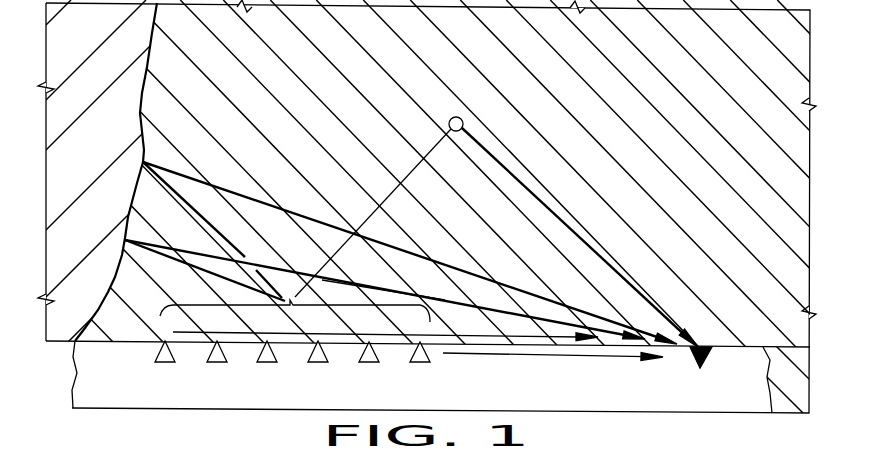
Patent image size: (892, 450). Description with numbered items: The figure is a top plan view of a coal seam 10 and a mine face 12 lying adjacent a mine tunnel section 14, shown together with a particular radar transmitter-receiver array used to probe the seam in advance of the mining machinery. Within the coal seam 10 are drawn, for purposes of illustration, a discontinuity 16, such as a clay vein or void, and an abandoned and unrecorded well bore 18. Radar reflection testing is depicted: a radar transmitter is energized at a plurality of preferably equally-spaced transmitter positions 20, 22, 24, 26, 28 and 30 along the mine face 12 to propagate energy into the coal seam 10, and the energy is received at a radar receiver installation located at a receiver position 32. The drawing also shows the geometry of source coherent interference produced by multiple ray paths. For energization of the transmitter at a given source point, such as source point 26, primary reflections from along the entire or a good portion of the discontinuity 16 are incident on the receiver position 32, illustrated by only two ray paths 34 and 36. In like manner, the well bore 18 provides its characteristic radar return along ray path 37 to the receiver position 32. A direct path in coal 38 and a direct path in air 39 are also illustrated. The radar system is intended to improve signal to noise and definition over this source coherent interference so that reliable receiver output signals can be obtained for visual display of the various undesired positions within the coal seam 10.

The coal seam 10 is at (376, 81).
The mine face 12 is at (117, 345).
The mine tunnel section 14 is at (500, 396).
The discontinuity 16 is at (143, 126).
The well bore 18 is at (462, 120).
The transmitter position 20 is at (160, 363).
The transmitter position 22 is at (212, 363).
The transmitter position 24 is at (262, 363).
The transmitter position 26 is at (313, 363).
The transmitter position 28 is at (364, 363).
The transmitter position 30 is at (415, 363).
The receiver position 32 is at (687, 366).
The ray path 34 is at (185, 250).
The ray path 36 is at (230, 242).
The ray path 37 is at (535, 197).
The direct path in coal 38 is at (437, 335).
The direct path in air 39 is at (535, 356).